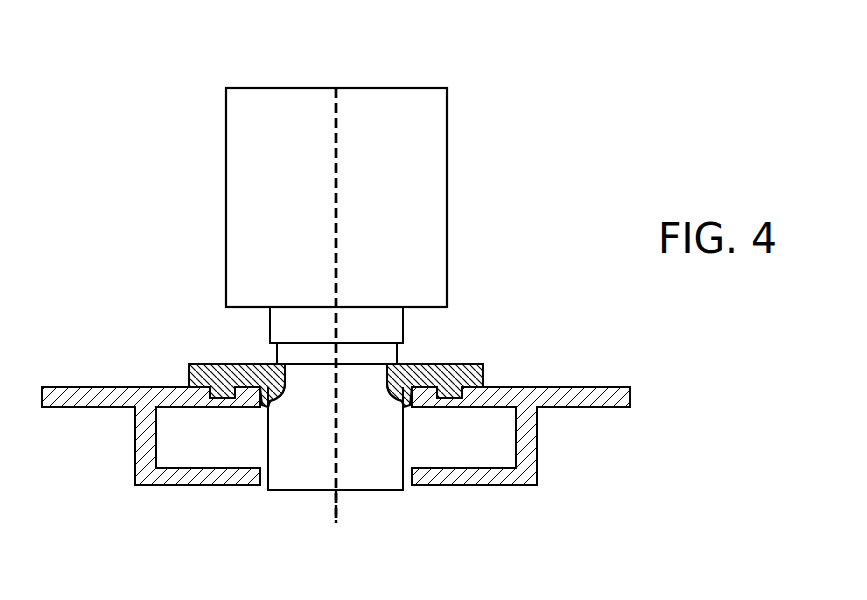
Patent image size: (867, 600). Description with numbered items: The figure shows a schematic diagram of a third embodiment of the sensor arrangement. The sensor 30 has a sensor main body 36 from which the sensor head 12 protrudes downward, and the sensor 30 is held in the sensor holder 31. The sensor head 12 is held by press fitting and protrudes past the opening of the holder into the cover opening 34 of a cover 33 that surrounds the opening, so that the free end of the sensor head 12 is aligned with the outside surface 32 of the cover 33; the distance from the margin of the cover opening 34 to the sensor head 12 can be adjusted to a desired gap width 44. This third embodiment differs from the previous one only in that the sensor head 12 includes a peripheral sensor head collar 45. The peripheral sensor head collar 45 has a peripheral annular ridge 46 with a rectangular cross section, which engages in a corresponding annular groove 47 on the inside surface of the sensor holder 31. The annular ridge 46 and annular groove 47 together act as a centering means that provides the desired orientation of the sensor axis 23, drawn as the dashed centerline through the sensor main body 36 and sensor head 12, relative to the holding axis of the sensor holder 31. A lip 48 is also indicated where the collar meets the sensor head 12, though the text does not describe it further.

The sensor head 12 is at (276, 352).
The sensor axis 23 is at (338, 177).
The sensor 30 is at (514, 90).
The sensor holder 31 is at (530, 387).
The outside surface 32 is at (490, 487).
The cover 33 is at (182, 488).
The cover opening 34 is at (318, 523).
The sensor main body 36 is at (431, 88).
The gap width 44 is at (262, 491).
The peripheral sensor head collar 45 is at (443, 364).
The peripheral annular ridge 46 is at (220, 378).
The annular groove 47 is at (463, 397).
The lip 48 is at (263, 409).